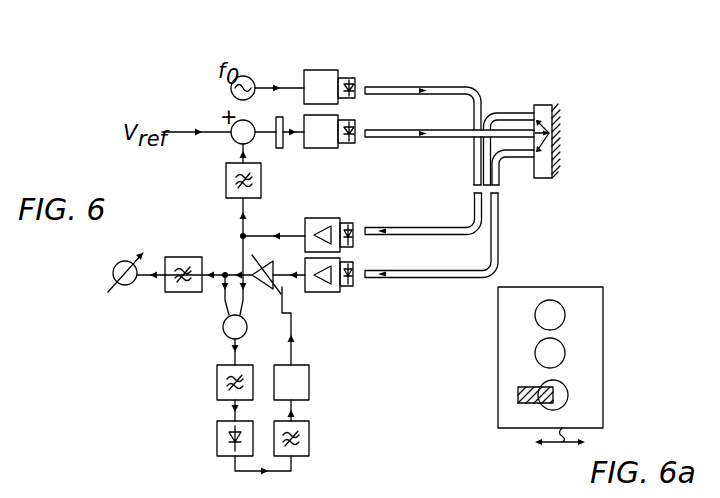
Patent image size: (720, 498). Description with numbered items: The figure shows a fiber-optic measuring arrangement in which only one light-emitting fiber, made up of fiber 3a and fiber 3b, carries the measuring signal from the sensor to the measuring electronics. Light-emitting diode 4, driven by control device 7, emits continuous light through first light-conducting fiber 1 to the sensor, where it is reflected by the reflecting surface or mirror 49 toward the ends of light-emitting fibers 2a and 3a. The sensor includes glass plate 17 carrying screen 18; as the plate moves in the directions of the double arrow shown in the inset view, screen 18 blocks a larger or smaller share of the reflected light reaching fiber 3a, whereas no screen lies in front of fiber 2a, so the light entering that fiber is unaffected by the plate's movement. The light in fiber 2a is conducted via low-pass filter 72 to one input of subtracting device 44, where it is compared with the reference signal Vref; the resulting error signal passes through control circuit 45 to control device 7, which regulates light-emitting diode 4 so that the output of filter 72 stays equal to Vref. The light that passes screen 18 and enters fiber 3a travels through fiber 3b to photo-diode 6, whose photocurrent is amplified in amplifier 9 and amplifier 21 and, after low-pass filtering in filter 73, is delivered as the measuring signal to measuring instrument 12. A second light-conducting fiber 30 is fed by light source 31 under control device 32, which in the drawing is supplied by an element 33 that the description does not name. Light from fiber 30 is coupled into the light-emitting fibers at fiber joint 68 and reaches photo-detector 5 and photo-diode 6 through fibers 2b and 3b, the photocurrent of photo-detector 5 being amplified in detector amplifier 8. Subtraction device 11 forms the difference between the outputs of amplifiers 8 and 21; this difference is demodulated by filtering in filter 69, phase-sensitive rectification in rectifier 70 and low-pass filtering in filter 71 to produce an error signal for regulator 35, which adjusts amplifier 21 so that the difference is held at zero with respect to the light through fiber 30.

In FIG. 6, the first light-conducting fiber 1 is at (416, 138).
In FIG. 6a, the first light-conducting fiber 1 is at (563, 352).
In FIG. 6, the light-emitting fiber 2a is at (507, 112).
In FIG. 6a, the light-emitting fiber 2a is at (565, 305).
In FIG. 6, the light-emitting fiber 2b is at (392, 225).
In FIG. 6, the light-emitting fiber 3a is at (507, 158).
In FIG. 6a, the light-emitting fiber 3a is at (566, 385).
In FIG. 6, the light-emitting fiber 3b is at (455, 268).
In FIG. 6, the light-emitting diode 4 is at (352, 130).
In FIG. 6, the photo-detector 5 is at (356, 238).
In FIG. 6, the photo-diode 6 is at (356, 282).
In FIG. 6, the control device 7 is at (322, 148).
In FIG. 6, the detector amplifier 8 is at (318, 218).
In FIG. 6, the detector amplifier 9 is at (322, 292).
In FIG. 6, the subtraction device 11 is at (226, 338).
In FIG. 6, the measuring instrument 12 is at (125, 286).
In FIG. 6, the glass plate 17 is at (546, 178).
In FIG. 6a, the glass plate 17 is at (603, 358).
In FIG. 6, the screen 18 is at (533, 162).
In FIG. 6a, the screen 18 is at (520, 403).
In FIG. 6, the amplifier 21 is at (268, 265).
In FIG. 6, the second light-conducting fiber 30 is at (420, 86).
In FIG. 6, the light source 31 is at (352, 81).
In FIG. 6, the control device 32 is at (317, 70).
In FIG. 6, the oscillator 33 is at (231, 88).
In FIG. 6, the regulator 35 is at (309, 378).
In FIG. 6, the subtracting device 44 is at (234, 141).
In FIG. 6, the control circuit 45 is at (279, 117).
In FIG. 6, the reflecting surface 49 is at (560, 154).
In FIG. 6, the fiber joint 68 is at (473, 192).
In FIG. 6, the filter 69 is at (217, 380).
In FIG. 6, the rectifier 70 is at (217, 438).
In FIG. 6, the low-pass filter 71 is at (309, 436).
In FIG. 6, the low-pass filter 72 is at (261, 181).
In FIG. 6, the low-pass filter 73 is at (185, 292).